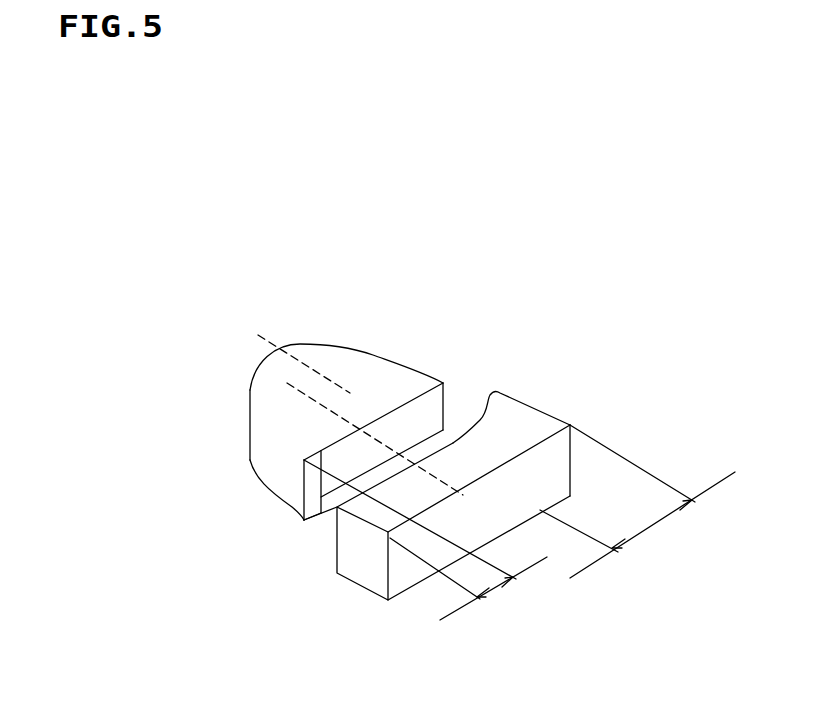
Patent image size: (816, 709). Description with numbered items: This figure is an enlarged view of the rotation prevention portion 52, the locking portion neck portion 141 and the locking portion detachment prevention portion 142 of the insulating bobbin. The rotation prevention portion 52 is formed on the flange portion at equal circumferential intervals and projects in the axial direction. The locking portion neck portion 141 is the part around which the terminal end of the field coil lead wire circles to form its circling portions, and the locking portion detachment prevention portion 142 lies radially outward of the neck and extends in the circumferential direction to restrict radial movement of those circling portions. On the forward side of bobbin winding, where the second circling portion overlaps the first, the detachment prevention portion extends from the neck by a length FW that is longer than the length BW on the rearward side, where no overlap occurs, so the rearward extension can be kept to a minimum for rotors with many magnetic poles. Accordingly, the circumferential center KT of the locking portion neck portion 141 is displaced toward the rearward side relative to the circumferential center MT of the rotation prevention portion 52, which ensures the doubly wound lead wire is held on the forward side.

The center of the rotation prevention portion MT is at (300, 362).
The center of the locking portion neck portion KT is at (341, 418).
The rotation prevention portion 52 is at (288, 413).
The locking portion neck portion 141 is at (372, 457).
The locking portion detachment prevention portion 142 is at (508, 438).
The length of the detachment prevention portion at the rearward side BW is at (425, 544).
The length of the detachment prevention portion at the forward side FW is at (702, 541).